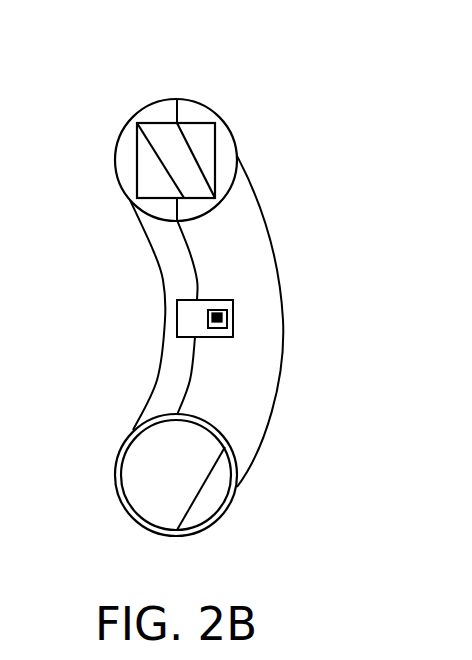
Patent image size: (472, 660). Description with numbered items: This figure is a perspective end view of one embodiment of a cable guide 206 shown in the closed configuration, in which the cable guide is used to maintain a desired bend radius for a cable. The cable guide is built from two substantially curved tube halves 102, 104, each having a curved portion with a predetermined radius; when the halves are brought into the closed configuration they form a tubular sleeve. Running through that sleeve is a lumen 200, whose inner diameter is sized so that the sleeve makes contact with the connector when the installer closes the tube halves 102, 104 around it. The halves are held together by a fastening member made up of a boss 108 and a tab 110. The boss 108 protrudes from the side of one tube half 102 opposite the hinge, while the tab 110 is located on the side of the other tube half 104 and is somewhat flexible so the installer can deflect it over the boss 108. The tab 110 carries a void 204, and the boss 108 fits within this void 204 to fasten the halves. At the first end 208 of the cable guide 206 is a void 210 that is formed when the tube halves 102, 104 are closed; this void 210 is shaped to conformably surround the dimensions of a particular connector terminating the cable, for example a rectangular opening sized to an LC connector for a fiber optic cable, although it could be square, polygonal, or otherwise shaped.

The tube half 102 is at (267, 212).
The tube half 104 is at (155, 252).
The boss 108 is at (250, 317).
The tab 110 is at (205, 300).
The lumen 200 is at (150, 507).
The void 204 is at (222, 333).
The cable guide 206 is at (108, 88).
The first end 208 is at (97, 139).
The void 210 is at (218, 125).